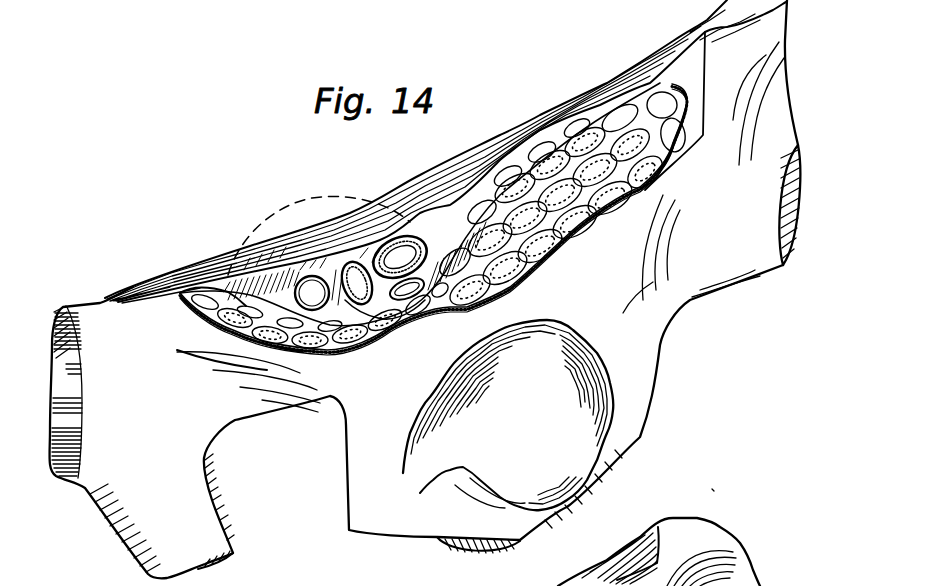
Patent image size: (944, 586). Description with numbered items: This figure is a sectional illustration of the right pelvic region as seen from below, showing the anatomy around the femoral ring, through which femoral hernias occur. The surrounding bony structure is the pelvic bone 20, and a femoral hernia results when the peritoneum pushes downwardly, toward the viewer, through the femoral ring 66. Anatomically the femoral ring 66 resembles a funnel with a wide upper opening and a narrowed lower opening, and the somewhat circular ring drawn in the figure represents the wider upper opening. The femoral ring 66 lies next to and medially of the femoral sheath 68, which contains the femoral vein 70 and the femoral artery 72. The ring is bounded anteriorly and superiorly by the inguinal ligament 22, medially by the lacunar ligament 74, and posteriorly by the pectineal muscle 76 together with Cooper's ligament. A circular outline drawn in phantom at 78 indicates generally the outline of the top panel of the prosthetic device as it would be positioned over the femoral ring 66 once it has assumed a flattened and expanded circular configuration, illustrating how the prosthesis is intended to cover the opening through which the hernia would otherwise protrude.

The pelvic bone 20 is at (397, 404).
The inguinal ligament 22 is at (503, 152).
The femoral ring 66 is at (311, 283).
The femoral sheath 68 is at (357, 251).
The femoral vein 70 is at (364, 303).
The femoral artery 72 is at (407, 242).
The lacunar ligament 74 is at (274, 278).
The pectineal muscle 76 is at (228, 294).
The circular outline of the top panel of the prosthesis 78 is at (318, 194).